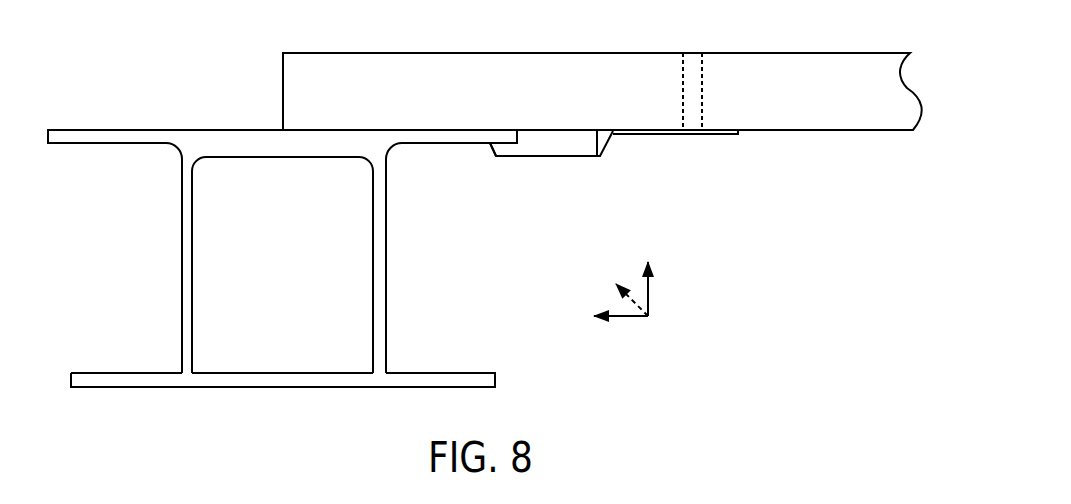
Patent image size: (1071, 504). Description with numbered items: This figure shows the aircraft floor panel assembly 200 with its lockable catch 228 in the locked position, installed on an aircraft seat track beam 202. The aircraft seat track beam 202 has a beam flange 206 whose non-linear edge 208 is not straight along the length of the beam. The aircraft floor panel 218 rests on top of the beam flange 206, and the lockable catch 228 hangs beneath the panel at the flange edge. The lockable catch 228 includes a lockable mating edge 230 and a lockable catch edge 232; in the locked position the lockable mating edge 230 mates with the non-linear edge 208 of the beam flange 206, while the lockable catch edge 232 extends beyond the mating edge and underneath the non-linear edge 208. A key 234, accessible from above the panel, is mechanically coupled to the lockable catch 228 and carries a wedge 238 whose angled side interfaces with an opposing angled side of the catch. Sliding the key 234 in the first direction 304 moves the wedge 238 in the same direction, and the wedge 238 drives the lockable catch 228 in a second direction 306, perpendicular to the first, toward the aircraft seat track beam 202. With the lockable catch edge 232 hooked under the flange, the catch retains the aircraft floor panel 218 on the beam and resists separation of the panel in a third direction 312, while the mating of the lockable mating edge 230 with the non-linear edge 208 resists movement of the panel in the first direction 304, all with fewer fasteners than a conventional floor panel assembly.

The aircraft floor panel assembly 200 is at (133, 28).
The aircraft seat track beam 202 is at (282, 388).
The beam flange 206 is at (459, 145).
The non-linear edge 208 is at (513, 137).
The aircraft floor panel 218 is at (334, 53).
The lockable catch 228 is at (582, 157).
The lockable mating edge 230 is at (523, 138).
The lockable catch edge 232 is at (488, 148).
The key 234 is at (694, 53).
The wedge 238 is at (663, 134).
The first direction 304 is at (623, 295).
The second direction 306 is at (613, 317).
The third direction 312 is at (650, 290).